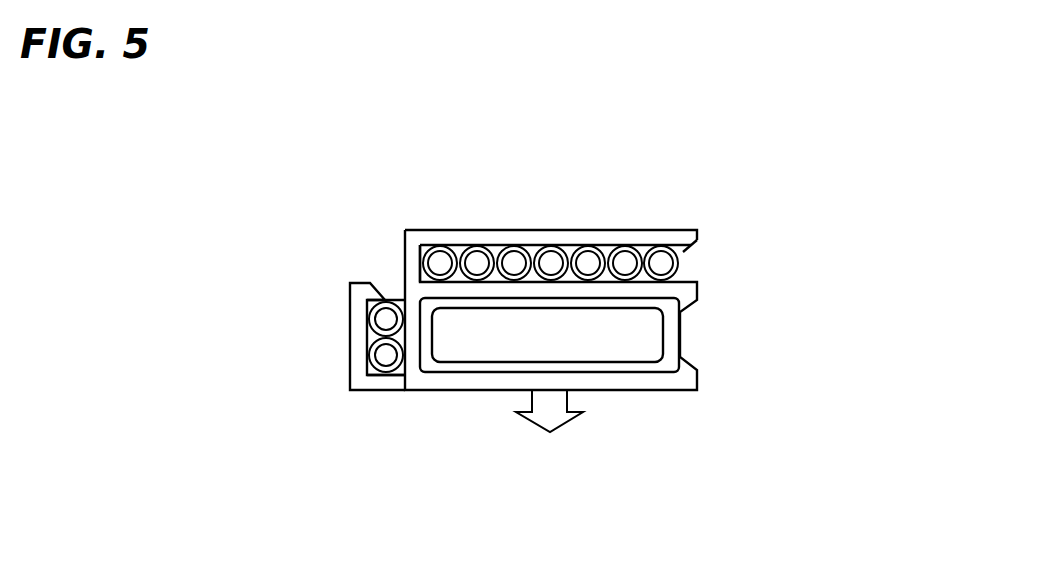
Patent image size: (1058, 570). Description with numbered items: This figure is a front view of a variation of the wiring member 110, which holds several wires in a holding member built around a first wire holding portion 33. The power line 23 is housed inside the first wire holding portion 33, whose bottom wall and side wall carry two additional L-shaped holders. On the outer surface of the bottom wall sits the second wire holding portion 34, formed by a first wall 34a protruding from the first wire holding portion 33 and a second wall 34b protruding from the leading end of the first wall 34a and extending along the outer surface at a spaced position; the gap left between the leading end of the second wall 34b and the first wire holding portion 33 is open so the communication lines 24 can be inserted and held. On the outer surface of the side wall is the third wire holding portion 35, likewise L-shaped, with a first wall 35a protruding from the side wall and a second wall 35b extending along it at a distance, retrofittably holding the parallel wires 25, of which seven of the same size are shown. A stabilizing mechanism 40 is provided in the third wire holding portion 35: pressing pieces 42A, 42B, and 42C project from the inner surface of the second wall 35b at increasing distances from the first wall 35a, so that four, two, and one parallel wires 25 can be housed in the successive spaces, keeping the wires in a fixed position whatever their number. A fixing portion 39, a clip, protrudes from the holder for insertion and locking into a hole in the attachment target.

The wiring member 110 is at (333, 130).
The stabilizing mechanism 40 is at (592, 168).
The third wire holding portion 35 is at (412, 230).
The first wall 35a is at (403, 262).
The second wall 35b is at (503, 243).
The parallel wires 25 is at (497, 248).
The pressing piece 42A is at (567, 245).
The pressing piece 42B is at (646, 245).
The pressing piece 42C is at (684, 253).
The power line 23 is at (678, 333).
The first wire holding portion 33 is at (472, 392).
The second wire holding portion 34 is at (348, 377).
The first wall 34a is at (378, 388).
The second wall 34b is at (358, 313).
The communication lines 24 is at (367, 335).
The fixing portion 39 is at (567, 420).